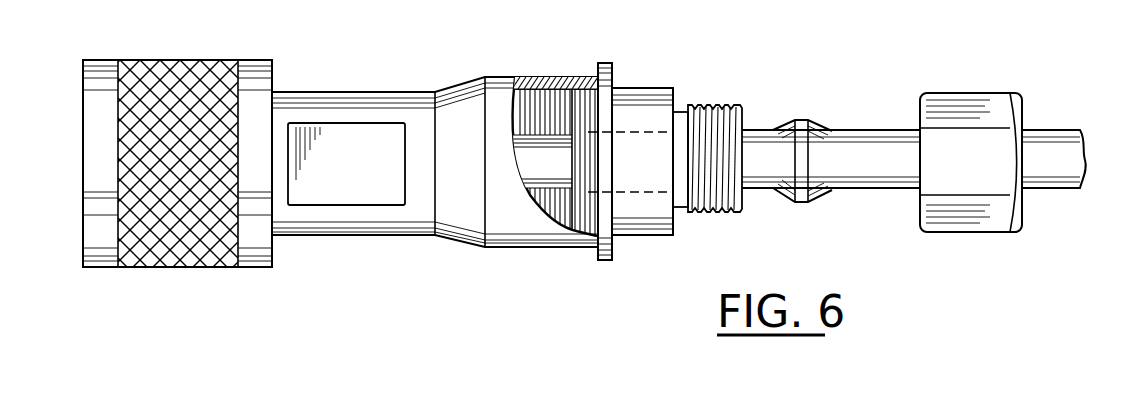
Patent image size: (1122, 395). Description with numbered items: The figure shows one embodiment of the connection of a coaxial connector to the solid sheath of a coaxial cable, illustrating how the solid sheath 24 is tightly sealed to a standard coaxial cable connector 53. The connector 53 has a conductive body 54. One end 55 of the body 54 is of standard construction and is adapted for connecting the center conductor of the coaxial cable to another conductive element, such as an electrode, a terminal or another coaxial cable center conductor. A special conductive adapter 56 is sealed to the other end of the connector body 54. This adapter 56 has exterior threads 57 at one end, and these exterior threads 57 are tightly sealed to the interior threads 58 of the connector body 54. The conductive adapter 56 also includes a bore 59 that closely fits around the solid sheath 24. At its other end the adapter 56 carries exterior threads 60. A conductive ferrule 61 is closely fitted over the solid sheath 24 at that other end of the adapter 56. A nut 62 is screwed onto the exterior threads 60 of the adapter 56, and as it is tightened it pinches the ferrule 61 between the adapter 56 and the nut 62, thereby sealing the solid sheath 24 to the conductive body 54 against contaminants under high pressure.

The end of body 55 is at (76, 60).
The coaxial cable connector 53 is at (383, 240).
The conductive body 54 is at (577, 245).
The interior threads 58 is at (543, 78).
The exterior threads 57 is at (589, 78).
The conductive adapter 56 is at (606, 261).
The bore 59 is at (708, 104).
The exterior threads 60 is at (713, 213).
The solid sheath 24 is at (762, 190).
The conductive ferrule 61 is at (798, 120).
The nut 62 is at (957, 93).